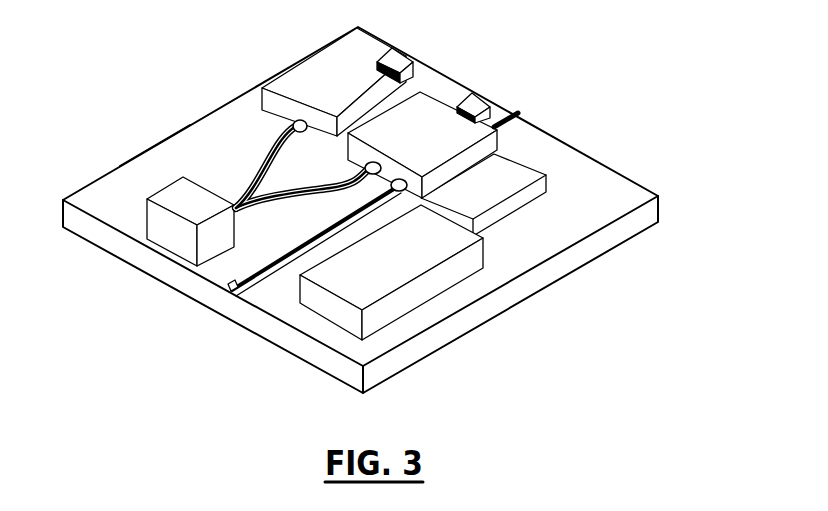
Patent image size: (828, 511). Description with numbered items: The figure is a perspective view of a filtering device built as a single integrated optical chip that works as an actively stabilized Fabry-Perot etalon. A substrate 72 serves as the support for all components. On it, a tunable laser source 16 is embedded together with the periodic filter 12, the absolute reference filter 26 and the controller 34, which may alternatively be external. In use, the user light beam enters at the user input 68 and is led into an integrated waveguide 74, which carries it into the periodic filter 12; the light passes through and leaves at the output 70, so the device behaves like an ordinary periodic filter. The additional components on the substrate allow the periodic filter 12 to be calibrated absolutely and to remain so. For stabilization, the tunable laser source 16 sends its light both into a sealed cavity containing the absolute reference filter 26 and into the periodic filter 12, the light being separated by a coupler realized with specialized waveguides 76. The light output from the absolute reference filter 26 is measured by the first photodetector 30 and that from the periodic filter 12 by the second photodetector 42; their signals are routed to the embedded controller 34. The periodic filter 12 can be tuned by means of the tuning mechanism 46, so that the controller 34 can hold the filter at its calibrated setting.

The periodic filter 12 is at (438, 140).
The tunable laser source 16 is at (172, 230).
The absolute reference filter 26 is at (332, 70).
The first photodetector 30 is at (392, 78).
The controller 34 is at (450, 277).
The second photodetector 42 is at (472, 102).
The tuning mechanism 46 is at (523, 173).
The user input 68 is at (233, 285).
The output 70 is at (440, 143).
The substrate 72 is at (153, 147).
The integrated waveguide 74 is at (308, 248).
The specialized waveguides 76 is at (273, 148).